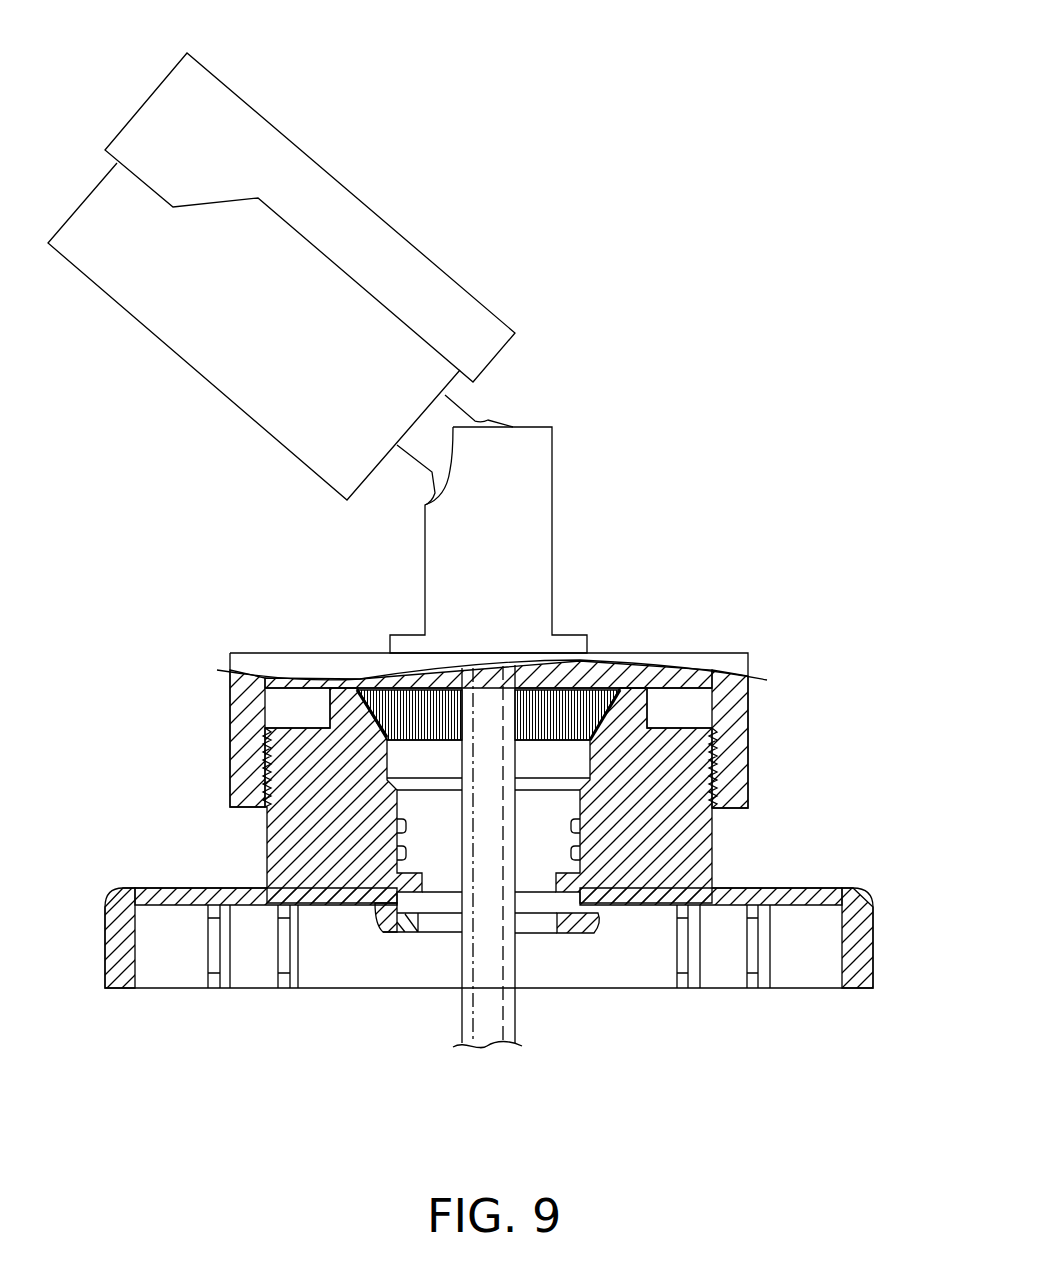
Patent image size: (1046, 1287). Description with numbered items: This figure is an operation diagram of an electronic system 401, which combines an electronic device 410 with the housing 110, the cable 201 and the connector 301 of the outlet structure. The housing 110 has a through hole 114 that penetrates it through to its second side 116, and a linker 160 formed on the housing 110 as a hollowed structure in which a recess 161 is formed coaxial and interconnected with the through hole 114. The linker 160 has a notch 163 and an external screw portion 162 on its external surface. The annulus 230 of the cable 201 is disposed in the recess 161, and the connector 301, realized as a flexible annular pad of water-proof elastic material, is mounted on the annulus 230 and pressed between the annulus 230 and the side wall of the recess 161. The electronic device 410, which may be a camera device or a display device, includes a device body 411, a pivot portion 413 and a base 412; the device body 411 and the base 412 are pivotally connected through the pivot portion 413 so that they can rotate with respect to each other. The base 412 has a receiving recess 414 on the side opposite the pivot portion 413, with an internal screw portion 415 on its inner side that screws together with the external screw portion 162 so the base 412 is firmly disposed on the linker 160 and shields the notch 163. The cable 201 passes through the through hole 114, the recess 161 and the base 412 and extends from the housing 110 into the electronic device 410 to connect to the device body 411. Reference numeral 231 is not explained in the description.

The electronic system 401 is at (708, 25).
The electronic device 410 is at (700, 239).
The device body 411 is at (415, 270).
The base 412 is at (673, 660).
The pivot portion 413 is at (476, 421).
The receiving recess 414 is at (276, 690).
The internal screw portion 415 is at (290, 743).
The notch 163 is at (395, 690).
The linker 160 is at (703, 852).
The external screw portion 162 is at (717, 745).
The recess 161 is at (410, 888).
The connector 301 is at (397, 853).
The seal ring 231 is at (586, 838).
The cable 201 is at (498, 1050).
The housing 110 is at (847, 887).
The second side 116 is at (392, 935).
The through hole 114 is at (442, 922).
The annulus 230 is at (532, 882).